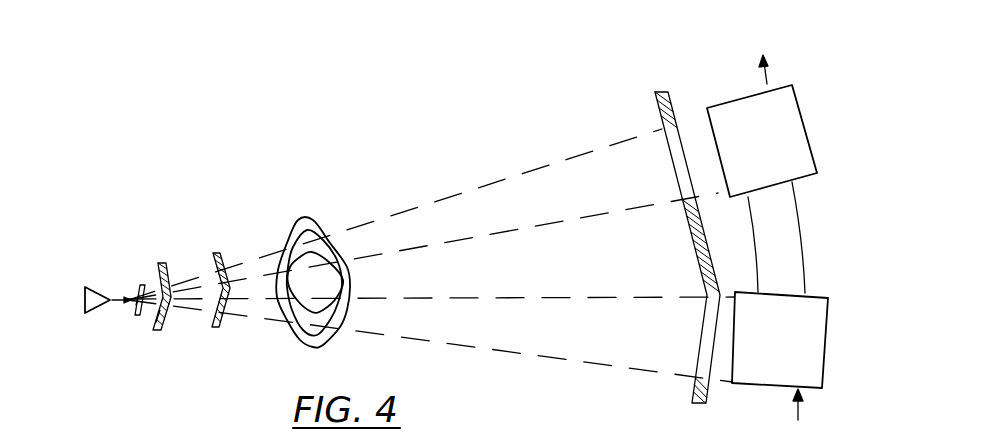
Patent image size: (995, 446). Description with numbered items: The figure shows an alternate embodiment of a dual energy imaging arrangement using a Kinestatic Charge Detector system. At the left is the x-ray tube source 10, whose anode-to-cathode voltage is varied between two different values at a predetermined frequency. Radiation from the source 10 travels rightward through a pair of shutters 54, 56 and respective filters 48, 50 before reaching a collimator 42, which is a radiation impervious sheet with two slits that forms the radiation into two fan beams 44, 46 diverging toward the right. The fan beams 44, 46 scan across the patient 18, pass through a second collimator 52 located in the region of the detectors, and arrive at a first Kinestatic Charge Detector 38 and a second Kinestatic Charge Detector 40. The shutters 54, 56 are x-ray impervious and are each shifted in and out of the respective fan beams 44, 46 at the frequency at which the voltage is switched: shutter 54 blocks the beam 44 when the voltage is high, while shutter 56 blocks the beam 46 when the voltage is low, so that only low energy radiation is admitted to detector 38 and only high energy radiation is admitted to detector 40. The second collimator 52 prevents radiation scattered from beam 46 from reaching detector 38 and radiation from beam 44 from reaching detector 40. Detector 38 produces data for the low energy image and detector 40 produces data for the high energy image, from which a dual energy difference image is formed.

The x-ray tube source 10 is at (94, 266).
The patient 18 is at (308, 220).
The first Kinestatic Charge Detector 38 is at (810, 145).
The second Kinestatic Charge Detector 40 is at (828, 330).
The collimator 42 is at (218, 252).
The fan beam 44 is at (524, 181).
The fan beam 46 is at (550, 343).
The filter 48 is at (142, 285).
The filter 50 is at (138, 315).
The second collimator 52 is at (655, 92).
The shutter 54 is at (162, 264).
The shutter 56 is at (156, 329).